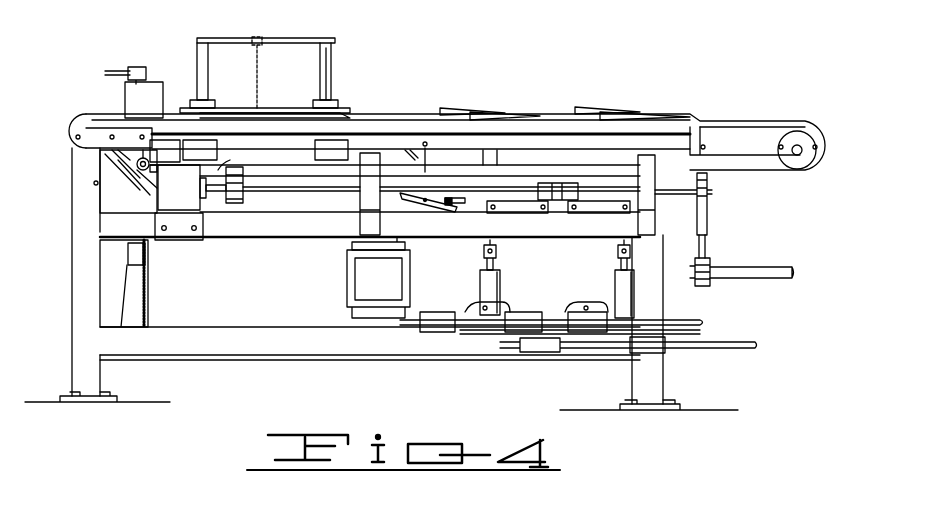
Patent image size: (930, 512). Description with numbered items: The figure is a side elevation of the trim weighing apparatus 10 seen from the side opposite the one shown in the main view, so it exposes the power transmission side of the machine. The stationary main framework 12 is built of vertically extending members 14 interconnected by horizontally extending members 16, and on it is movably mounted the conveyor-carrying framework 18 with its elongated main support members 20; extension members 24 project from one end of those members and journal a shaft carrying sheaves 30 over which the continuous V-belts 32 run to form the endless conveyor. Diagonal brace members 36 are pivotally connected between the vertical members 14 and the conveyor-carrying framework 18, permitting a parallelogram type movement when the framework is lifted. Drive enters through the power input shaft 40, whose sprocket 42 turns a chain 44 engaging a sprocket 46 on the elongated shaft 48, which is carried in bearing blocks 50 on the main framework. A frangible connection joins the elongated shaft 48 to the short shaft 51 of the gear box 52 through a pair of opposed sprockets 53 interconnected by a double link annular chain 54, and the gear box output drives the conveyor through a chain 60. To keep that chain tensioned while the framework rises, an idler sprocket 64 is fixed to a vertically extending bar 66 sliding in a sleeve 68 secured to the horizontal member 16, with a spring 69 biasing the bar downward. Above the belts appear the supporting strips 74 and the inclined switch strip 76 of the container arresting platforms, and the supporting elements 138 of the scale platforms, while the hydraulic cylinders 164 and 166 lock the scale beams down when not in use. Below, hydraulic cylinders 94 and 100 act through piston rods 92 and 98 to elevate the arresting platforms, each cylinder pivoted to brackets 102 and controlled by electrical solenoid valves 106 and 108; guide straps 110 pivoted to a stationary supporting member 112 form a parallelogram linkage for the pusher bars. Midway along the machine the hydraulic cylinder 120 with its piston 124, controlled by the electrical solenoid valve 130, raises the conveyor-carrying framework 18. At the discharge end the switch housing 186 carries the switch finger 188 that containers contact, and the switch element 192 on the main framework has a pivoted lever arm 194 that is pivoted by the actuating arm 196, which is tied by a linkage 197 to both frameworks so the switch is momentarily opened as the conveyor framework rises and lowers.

The trim weighing apparatus 10 is at (543, 56).
The stationary main framework 12 is at (316, 360).
The vertically extending members 14 is at (85, 228).
The horizontally extending members 16 is at (250, 351).
The conveyor-carrying framework 18 is at (812, 125).
The main support members 20 is at (553, 148).
The extension members 24 is at (756, 151).
The sheaves 30 is at (806, 160).
The V-belts 32 is at (113, 113).
The diagonal brace members 36 is at (114, 153).
The power input shaft 40 is at (742, 268).
The sprocket 42 is at (708, 287).
The chain 44 is at (707, 225).
The sprocket 46 is at (709, 186).
The elongated shaft 48 is at (300, 190).
The bearing blocks 50 is at (365, 200).
The short shaft 51 is at (215, 190).
The gear box 52 is at (190, 194).
The opposed sprockets 53 is at (216, 170).
The double link annular chain 54 is at (240, 200).
The chain 60 is at (125, 181).
The idler sprocket 64 is at (150, 166).
The bar 66 is at (136, 260).
The sleeve 68 is at (133, 298).
The spring 69 is at (150, 262).
The supporting strips 74 is at (471, 113).
The inclined switch strip 76 is at (460, 107).
The piston rod 92 is at (620, 256).
The hydraulic cylinder 94 is at (617, 288).
The piston rod 98 is at (496, 255).
The hydraulic cylinder 100 is at (500, 283).
The brackets 102 is at (488, 326).
The electrical solenoid valve 106 is at (588, 332).
The electrical solenoid valve 108 is at (522, 332).
The guide straps 110 is at (518, 213).
The stationary supporting member 112 is at (412, 326).
The hydraulic cylinder 120 is at (418, 282).
The piston 124 is at (416, 252).
The electrical solenoid valve 130 is at (442, 330).
The supporting elements 138 is at (356, 115).
The hydraulic cylinder 164 is at (200, 50).
The hydraulic cylinder 166 is at (336, 52).
The switch housing 186 is at (158, 106).
The switch finger 188 is at (112, 70).
The switch element 192 is at (478, 205).
The lever arm 194 is at (470, 180).
The actuating arm 196 is at (428, 212).
The linkage 197 is at (430, 178).